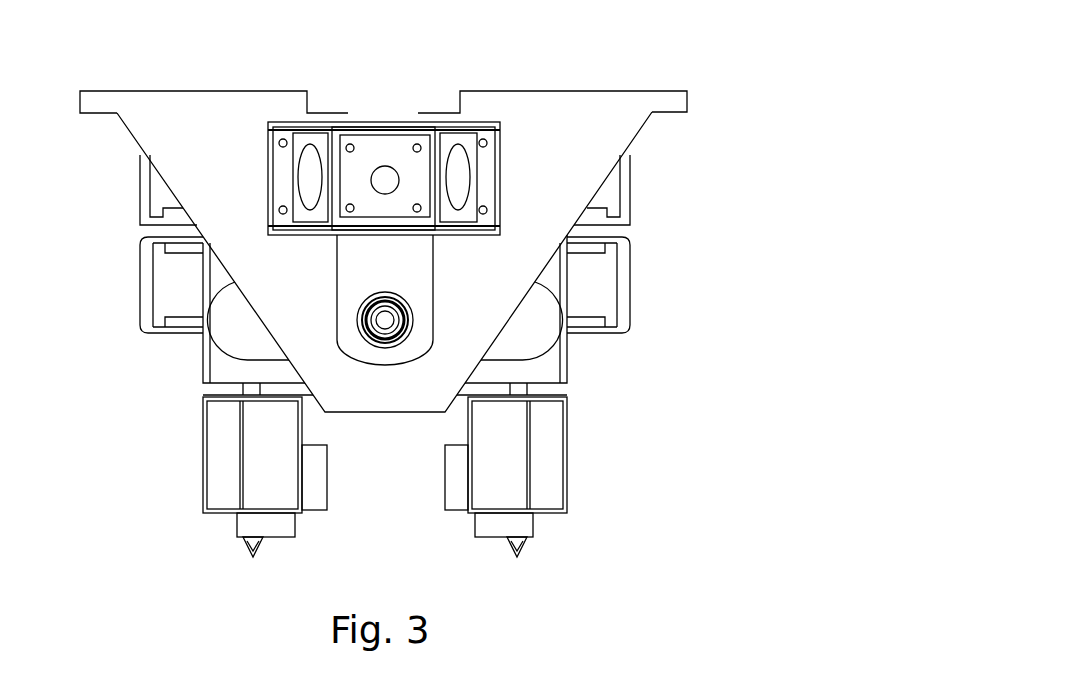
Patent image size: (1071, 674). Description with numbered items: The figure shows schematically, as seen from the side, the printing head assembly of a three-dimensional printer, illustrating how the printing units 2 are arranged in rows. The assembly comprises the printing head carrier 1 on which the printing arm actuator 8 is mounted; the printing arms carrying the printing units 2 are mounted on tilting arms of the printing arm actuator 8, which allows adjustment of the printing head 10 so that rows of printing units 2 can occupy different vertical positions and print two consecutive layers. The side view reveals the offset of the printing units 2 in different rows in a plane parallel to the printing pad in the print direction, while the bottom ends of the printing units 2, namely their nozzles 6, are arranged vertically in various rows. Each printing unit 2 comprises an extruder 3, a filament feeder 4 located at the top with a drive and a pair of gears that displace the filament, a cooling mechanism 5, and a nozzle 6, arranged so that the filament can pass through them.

The printing head 10 is at (752, 46).
The printing head carrier 1 is at (583, 157).
The printing unit 2 is at (740, 405).
The extruder 3 is at (542, 458).
The filament feeder 4 is at (660, 219).
The cooling mechanism 5 is at (455, 487).
The nozzle 6 is at (530, 540).
The printing arm actuator 8 is at (352, 192).